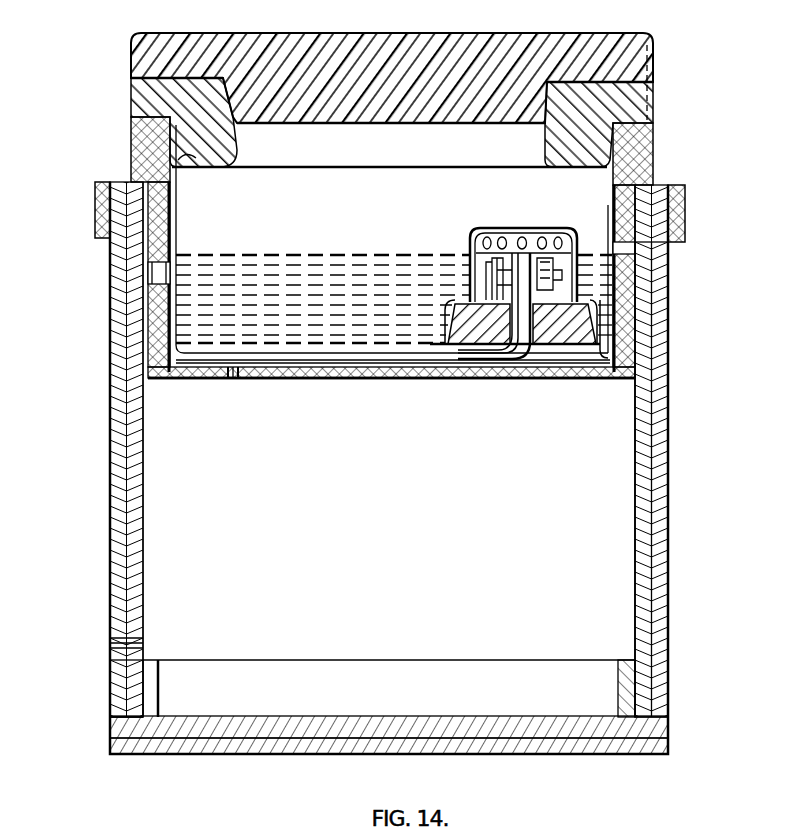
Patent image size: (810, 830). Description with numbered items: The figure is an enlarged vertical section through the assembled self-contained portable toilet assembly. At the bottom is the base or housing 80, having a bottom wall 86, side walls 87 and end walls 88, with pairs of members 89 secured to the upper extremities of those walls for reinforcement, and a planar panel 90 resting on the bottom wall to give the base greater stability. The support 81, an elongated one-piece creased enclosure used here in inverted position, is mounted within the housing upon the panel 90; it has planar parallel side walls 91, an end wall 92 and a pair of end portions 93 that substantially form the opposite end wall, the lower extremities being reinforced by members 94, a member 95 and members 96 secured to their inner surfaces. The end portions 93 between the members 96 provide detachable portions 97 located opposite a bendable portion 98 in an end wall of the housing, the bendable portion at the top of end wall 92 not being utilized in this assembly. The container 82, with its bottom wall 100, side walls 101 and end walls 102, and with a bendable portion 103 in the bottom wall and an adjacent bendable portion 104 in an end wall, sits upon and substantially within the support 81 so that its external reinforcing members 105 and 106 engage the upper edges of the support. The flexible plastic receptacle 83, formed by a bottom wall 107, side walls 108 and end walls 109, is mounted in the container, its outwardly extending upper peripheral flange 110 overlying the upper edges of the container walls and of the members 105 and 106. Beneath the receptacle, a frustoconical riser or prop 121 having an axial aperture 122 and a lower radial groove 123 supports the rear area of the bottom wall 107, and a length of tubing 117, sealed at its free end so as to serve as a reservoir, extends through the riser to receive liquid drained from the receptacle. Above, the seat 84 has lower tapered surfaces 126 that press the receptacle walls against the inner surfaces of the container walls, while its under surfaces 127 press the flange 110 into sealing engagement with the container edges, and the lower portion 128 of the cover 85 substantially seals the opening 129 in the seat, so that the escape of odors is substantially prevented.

The base or housing 80 is at (670, 433).
The support 81 is at (633, 475).
The container 82 is at (597, 382).
The receptacle 83 is at (597, 232).
The seat 84 is at (120, 82).
The cover 85 is at (122, 30).
The bottom wall 86 is at (523, 746).
The side walls 87 is at (372, 530).
The end walls 88 is at (110, 452).
The pairs of members 89 is at (100, 212).
The planar panel 90 is at (343, 716).
The side walls 91 is at (618, 526).
The end wall 92 is at (642, 551).
The end portions 93 is at (133, 477).
The members 94 is at (250, 678).
The member 95 is at (620, 680).
The members 96 is at (149, 678).
The detachable portions 97 is at (133, 678).
The bendable portion 98 is at (124, 710).
The bottom wall 100 is at (452, 358).
The side walls 101 is at (318, 232).
The end walls 102 is at (155, 213).
The bendable portion 103 is at (191, 373).
The bendable portion 104 is at (157, 328).
The members 105 is at (140, 152).
The members 106 is at (637, 173).
The bottom wall 107 is at (287, 343).
The side walls 108 is at (387, 227).
The end walls 109 is at (168, 243).
The upper peripheral flange 110 is at (655, 140).
The tubing 117 is at (367, 352).
The riser or prop 121 is at (578, 361).
The axial aperture 122 is at (545, 342).
The lower radial groove 123 is at (496, 346).
The lower tapered surfaces 126 is at (199, 158).
The under surfaces 127 is at (140, 117).
The lower portion 128 is at (350, 115).
The opening 129 is at (503, 125).